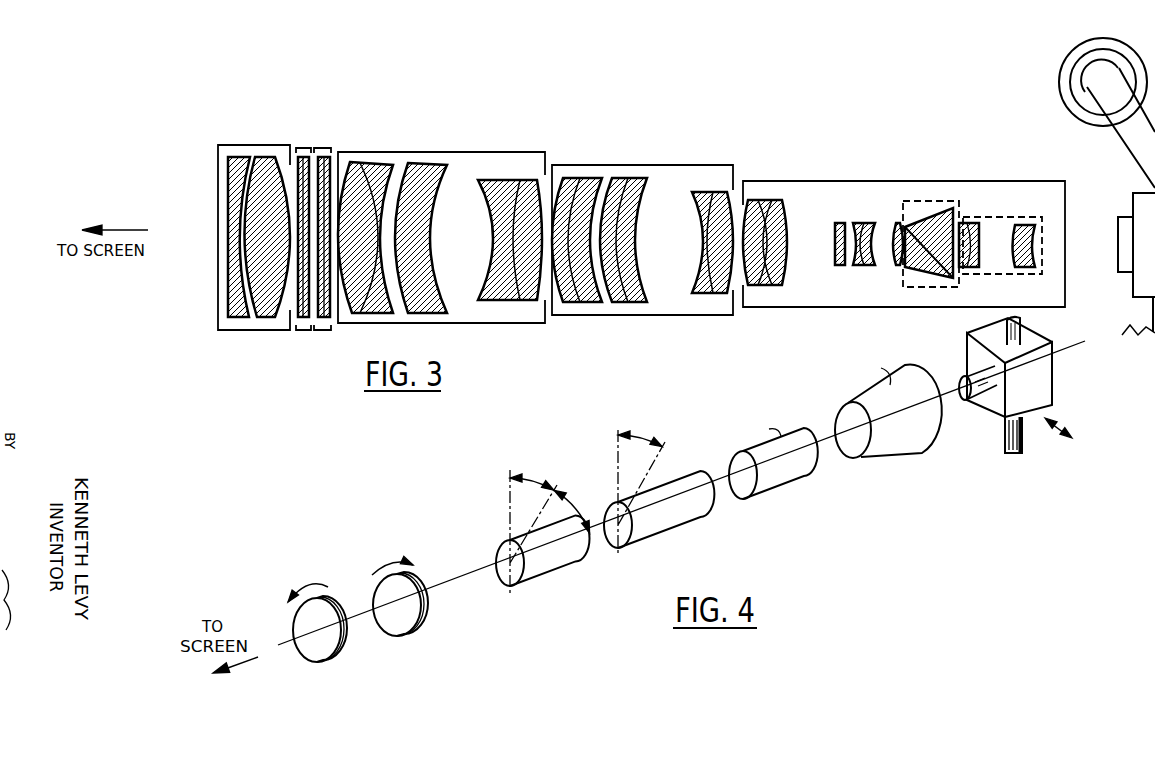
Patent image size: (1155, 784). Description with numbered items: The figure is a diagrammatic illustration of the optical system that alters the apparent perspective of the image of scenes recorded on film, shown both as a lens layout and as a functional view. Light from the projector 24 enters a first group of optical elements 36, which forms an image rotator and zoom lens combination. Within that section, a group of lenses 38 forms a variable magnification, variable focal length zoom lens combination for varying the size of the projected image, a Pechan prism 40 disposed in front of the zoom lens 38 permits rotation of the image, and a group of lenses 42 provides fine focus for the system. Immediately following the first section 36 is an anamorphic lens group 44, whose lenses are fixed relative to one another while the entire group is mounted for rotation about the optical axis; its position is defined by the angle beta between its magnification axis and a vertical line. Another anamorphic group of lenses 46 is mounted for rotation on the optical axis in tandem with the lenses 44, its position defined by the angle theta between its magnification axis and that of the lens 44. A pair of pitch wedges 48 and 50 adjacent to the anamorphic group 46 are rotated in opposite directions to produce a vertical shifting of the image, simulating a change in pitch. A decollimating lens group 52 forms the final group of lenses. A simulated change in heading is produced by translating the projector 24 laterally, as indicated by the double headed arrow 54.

In FIG. 4, the projector 24 is at (964, 376).
In FIG. 3, the first group of optical elements 36 is at (967, 181).
In FIG. 3, the zoom lens combination 38 is at (902, 172).
In FIG. 4, the zoom lens combination 38 is at (774, 488).
In FIG. 3, the Pechan prism 40 is at (902, 207).
In FIG. 4, the Pechan prism 40 is at (873, 458).
In FIG. 3, the fine focus lens group 42 is at (982, 218).
In FIG. 3, the anamorphic lens group 44 is at (612, 165).
In FIG. 4, the anamorphic lens group 44 is at (658, 532).
In FIG. 3, the second anamorphic lens group 46 is at (382, 150).
In FIG. 4, the second anamorphic lens group 46 is at (547, 571).
In FIG. 3, the pitch wedge 48 is at (322, 145).
In FIG. 4, the pitch wedge 48 is at (405, 634).
In FIG. 3, the pitch wedge 50 is at (305, 145).
In FIG. 4, the pitch wedge 50 is at (320, 662).
In FIG. 3, the decollimating lens group 52 is at (237, 145).
In FIG. 4, the double headed arrow 54 is at (1050, 428).